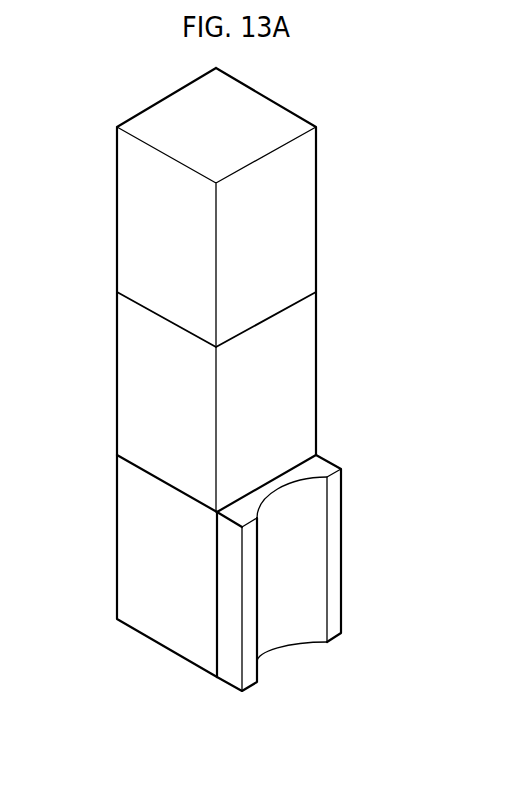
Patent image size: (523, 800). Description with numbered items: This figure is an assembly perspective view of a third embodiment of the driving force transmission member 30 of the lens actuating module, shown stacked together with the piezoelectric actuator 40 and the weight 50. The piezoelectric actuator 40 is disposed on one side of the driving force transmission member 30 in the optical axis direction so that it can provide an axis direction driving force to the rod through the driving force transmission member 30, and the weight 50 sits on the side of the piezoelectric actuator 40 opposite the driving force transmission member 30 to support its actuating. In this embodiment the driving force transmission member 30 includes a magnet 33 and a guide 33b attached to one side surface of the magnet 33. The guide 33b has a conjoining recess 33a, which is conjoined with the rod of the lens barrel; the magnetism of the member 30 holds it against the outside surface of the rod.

The weight 50 is at (302, 234).
The piezoelectric actuator 40 is at (302, 376).
The driving force transmission member 30 is at (241, 588).
The magnet 33 is at (132, 525).
The conjoining recess 33a is at (305, 602).
The guide 33b is at (235, 675).